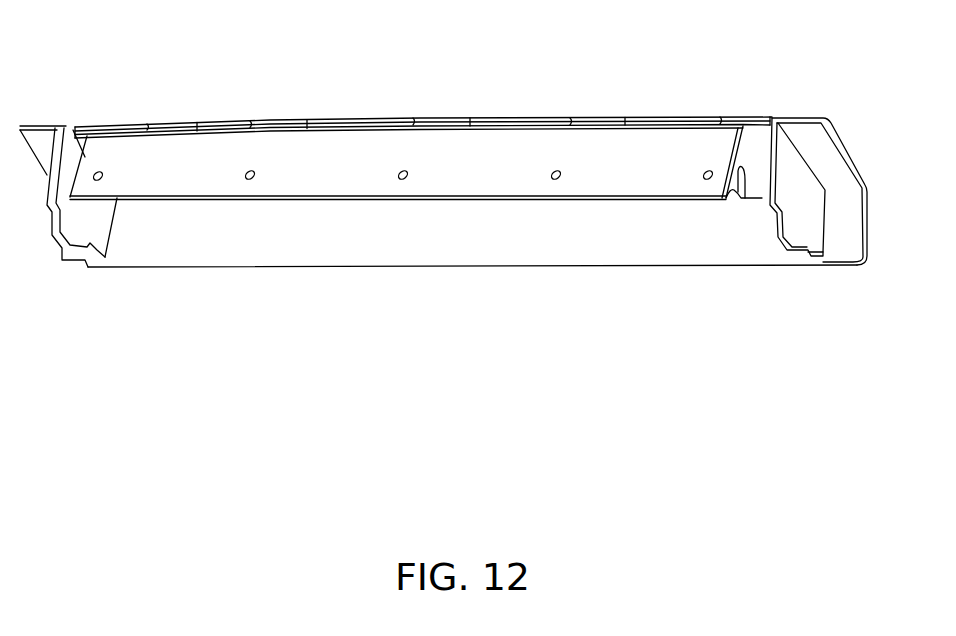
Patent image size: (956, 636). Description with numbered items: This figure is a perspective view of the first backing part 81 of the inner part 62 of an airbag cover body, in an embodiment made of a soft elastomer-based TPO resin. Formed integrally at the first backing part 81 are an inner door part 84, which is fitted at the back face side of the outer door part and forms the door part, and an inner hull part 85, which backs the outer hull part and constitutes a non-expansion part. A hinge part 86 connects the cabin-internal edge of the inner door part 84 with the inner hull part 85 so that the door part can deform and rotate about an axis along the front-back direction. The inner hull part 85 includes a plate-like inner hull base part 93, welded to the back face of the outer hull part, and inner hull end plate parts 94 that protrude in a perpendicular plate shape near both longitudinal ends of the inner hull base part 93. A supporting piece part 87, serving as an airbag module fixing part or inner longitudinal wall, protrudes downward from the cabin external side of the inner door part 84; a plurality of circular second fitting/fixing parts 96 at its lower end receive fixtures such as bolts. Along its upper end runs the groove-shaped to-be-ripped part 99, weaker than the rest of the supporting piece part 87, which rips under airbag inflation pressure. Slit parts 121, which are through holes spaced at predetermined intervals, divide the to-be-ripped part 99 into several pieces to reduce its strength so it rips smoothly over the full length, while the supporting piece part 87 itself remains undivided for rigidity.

The inner part 62 is at (92, 45).
The first backing part 81 is at (98, 103).
The inner door part 84 is at (703, 117).
The inner hull part 85 is at (798, 118).
The hinge part 86 is at (741, 208).
The supporting piece part 87 is at (487, 152).
The inner hull base part 93 is at (642, 257).
The inner hull end plate part 94 is at (73, 232).
The second fitting/fixing part 96 is at (100, 182).
The to-be-ripped part 99 is at (197, 128).
The slit part 121 is at (118, 128).